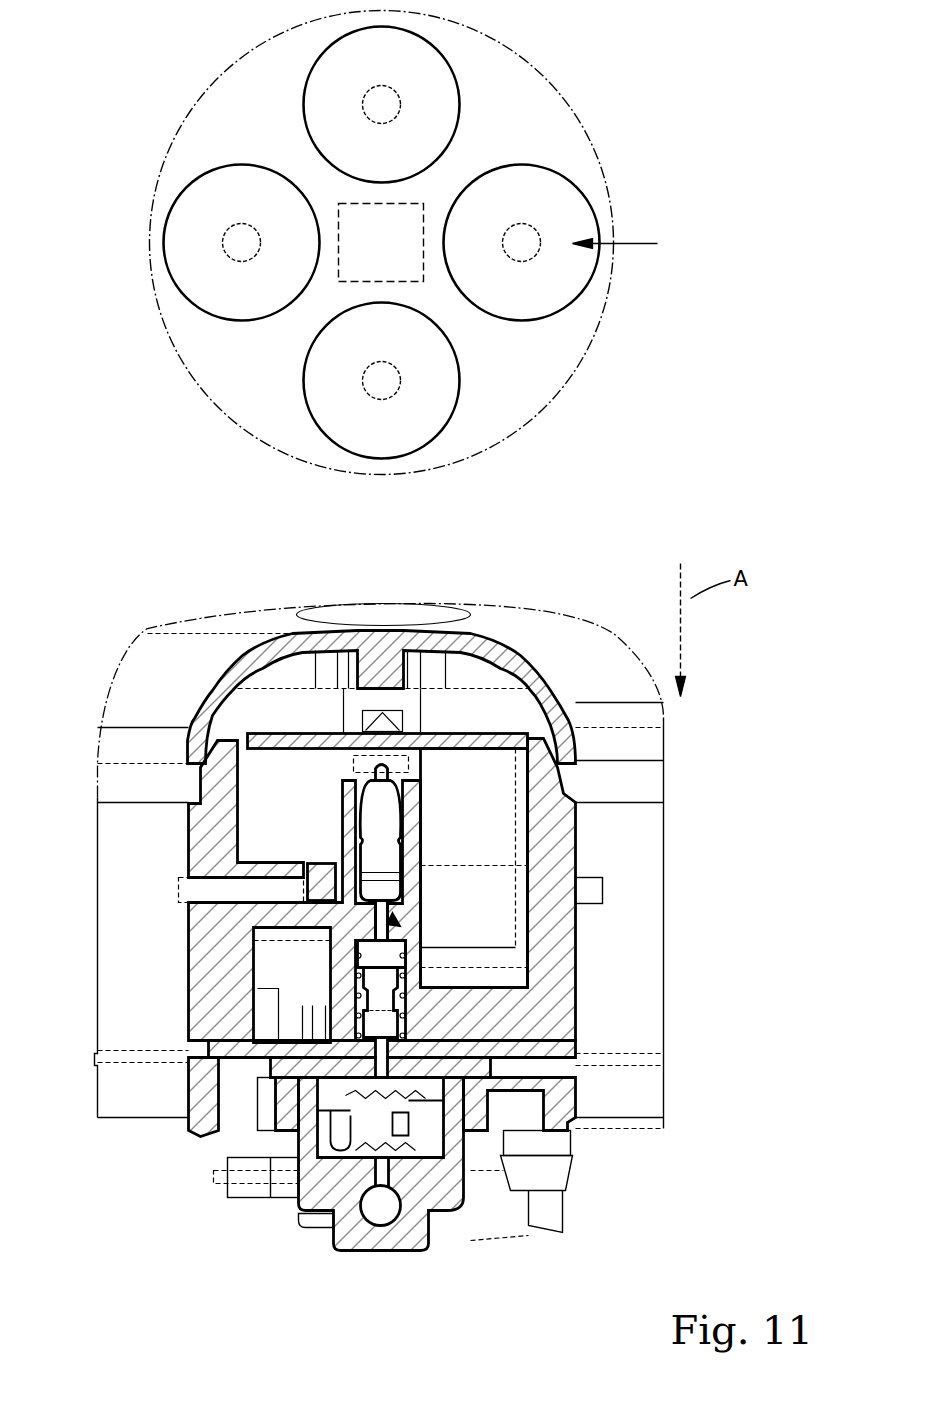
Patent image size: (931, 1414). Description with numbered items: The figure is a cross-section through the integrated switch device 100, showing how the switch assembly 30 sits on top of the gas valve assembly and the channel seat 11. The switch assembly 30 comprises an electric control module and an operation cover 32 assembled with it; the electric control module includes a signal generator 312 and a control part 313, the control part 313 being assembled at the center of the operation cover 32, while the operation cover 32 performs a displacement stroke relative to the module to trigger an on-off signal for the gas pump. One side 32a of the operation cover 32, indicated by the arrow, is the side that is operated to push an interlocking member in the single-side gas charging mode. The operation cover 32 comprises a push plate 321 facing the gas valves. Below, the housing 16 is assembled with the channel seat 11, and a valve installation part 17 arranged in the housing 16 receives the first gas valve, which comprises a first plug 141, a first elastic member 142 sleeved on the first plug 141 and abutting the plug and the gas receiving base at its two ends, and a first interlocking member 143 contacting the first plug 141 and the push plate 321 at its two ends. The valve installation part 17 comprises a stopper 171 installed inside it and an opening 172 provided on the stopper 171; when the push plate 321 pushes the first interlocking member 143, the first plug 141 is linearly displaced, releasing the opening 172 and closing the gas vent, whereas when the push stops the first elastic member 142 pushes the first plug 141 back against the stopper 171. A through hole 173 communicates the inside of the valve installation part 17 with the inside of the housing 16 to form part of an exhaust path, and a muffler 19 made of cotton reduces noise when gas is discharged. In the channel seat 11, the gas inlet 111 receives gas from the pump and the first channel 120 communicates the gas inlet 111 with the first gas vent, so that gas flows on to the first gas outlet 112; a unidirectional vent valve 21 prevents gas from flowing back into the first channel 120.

The integrated switch device 100 is at (789, 31).
The switch assembly 30 is at (213, 616).
The operation cover 32 is at (607, 173).
The side of the operation cover 32a is at (625, 248).
The control part 313 is at (350, 204).
The push plate 321 is at (478, 735).
The signal generator 312 is at (553, 768).
The first interlocking member 143 is at (222, 737).
The valve installation part 17 is at (495, 812).
The through hole 173 is at (322, 862).
The opening 172 is at (423, 848).
The muffler 19 is at (312, 890).
The stopper 171 is at (420, 935).
The first plug 141 is at (370, 953).
The housing 16 is at (663, 975).
The first elastic member 142 is at (350, 1000).
The channel seat 11 is at (650, 1078).
The first channel 120 is at (350, 1210).
The unidirectional vent valve 21 is at (410, 1162).
The gas inlet 111 is at (563, 1205).
The first gas outlet 112 is at (535, 1170).